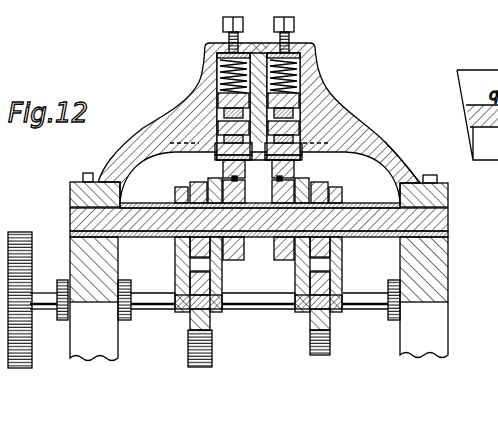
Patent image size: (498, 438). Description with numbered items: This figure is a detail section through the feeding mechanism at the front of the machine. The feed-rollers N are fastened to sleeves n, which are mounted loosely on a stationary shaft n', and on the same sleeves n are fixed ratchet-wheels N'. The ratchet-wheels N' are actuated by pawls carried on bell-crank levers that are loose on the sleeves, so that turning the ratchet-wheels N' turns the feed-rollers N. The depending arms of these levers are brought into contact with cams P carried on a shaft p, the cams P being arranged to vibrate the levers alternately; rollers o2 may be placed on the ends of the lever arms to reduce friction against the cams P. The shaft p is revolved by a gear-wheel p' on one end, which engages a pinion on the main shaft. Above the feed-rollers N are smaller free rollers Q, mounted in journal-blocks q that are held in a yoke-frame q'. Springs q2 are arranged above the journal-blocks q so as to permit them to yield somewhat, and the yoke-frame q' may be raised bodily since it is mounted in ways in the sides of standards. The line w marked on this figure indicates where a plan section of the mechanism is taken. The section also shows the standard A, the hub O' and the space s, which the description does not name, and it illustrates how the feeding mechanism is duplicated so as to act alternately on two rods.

The springs q2 is at (313, 49).
The journal-blocks q is at (257, 106).
The free rollers Q is at (214, 138).
The section line w is at (165, 113).
The yoke-frame q' is at (405, 161).
The sleeves n is at (259, 190).
The ratchet-wheels N' is at (255, 181).
The space s is at (278, 179).
The stationary shaft n' is at (272, 222).
The standard A is at (438, 262).
The bearing hub O' is at (245, 274).
The rollers o2 is at (191, 325).
The cams P is at (190, 363).
The feed-rollers N is at (258, 301).
The shaft p is at (215, 285).
The gear-wheel p' is at (18, 322).